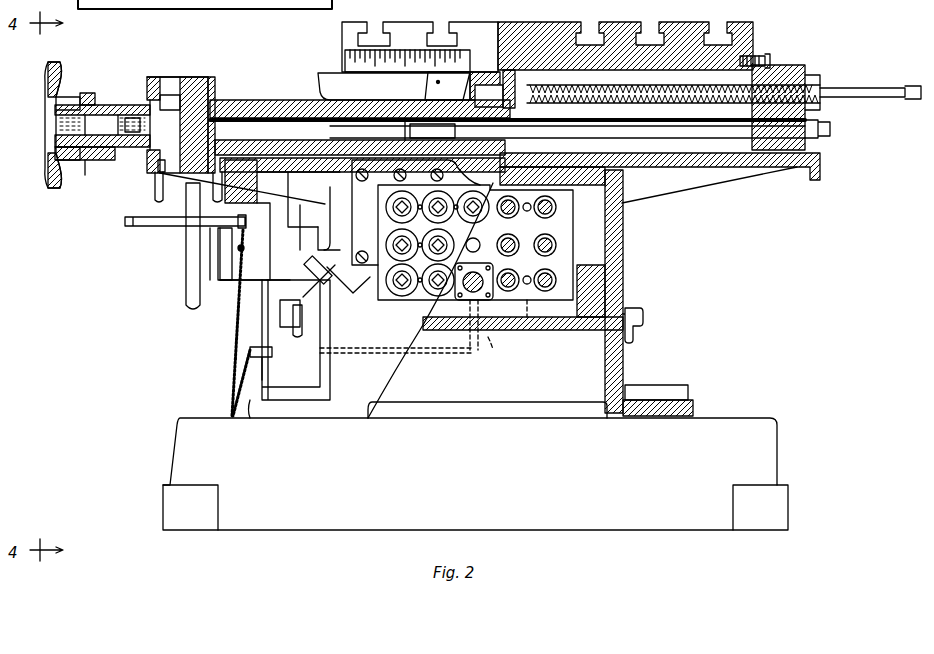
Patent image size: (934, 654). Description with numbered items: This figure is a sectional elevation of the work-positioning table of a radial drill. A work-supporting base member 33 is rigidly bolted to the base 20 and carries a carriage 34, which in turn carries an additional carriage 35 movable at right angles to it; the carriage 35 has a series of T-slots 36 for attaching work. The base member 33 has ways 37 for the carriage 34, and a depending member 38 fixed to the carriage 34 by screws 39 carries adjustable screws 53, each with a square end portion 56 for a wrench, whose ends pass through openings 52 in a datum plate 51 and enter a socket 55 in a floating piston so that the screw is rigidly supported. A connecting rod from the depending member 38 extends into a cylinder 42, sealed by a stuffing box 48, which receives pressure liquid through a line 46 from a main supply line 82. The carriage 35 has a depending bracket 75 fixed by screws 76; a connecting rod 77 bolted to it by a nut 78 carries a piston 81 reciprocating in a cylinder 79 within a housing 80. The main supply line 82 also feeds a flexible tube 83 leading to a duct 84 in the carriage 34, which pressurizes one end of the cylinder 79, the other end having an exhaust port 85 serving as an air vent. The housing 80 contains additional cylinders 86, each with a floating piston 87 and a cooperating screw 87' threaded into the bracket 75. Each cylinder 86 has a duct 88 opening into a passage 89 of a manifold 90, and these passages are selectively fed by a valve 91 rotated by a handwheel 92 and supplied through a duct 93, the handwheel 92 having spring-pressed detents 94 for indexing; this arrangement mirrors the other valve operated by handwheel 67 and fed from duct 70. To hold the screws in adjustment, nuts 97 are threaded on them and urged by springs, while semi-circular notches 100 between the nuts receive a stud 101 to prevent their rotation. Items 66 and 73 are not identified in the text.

The base 20 is at (783, 502).
The work-supporting base member 33 is at (628, 372).
The carriage 34 is at (330, 205).
The carriage 35 is at (452, 22).
The T-slots 36 is at (650, 22).
The ways 37 is at (624, 272).
The depending member 38 is at (372, 228).
The screws 39 is at (352, 185).
The cylinder 42 is at (488, 342).
The line 46 is at (317, 353).
The stuffing box 48 is at (485, 298).
The datum plate 51 is at (558, 228).
The openings 52 is at (478, 240).
The adjustable screws 53 is at (320, 258).
The socket 55 is at (508, 90).
The square end portion 56 is at (397, 210).
The lever bar 66 is at (228, 280).
The handwheel 67 is at (185, 295).
The duct 70 is at (263, 310).
The link 73 is at (295, 312).
The depending bracket 75 is at (788, 76).
The screws 76 is at (772, 55).
The connecting rod 77 is at (667, 140).
The nut 78 is at (815, 138).
The cylinder 79 is at (355, 112).
The housing 80 is at (332, 85).
The piston 81 is at (410, 133).
The main supply line 82 is at (253, 405).
The flexible tube 83 is at (233, 346).
The duct 84 is at (283, 170).
The exhaust port 85 is at (195, 180).
The cylinders 86 is at (290, 88).
The floating piston 87 is at (425, 66).
The screw 87' is at (724, 108).
The duct 88 is at (218, 92).
The passage 89 is at (180, 95).
The manifold 90 is at (180, 77).
The valve 91 is at (146, 88).
The handwheel 92 is at (45, 74).
The duct 93 is at (118, 115).
The spring-pressed detents 94 is at (85, 162).
The nuts 97 is at (370, 320).
The semi-circular notches 100 is at (423, 285).
The stud 101 is at (440, 290).